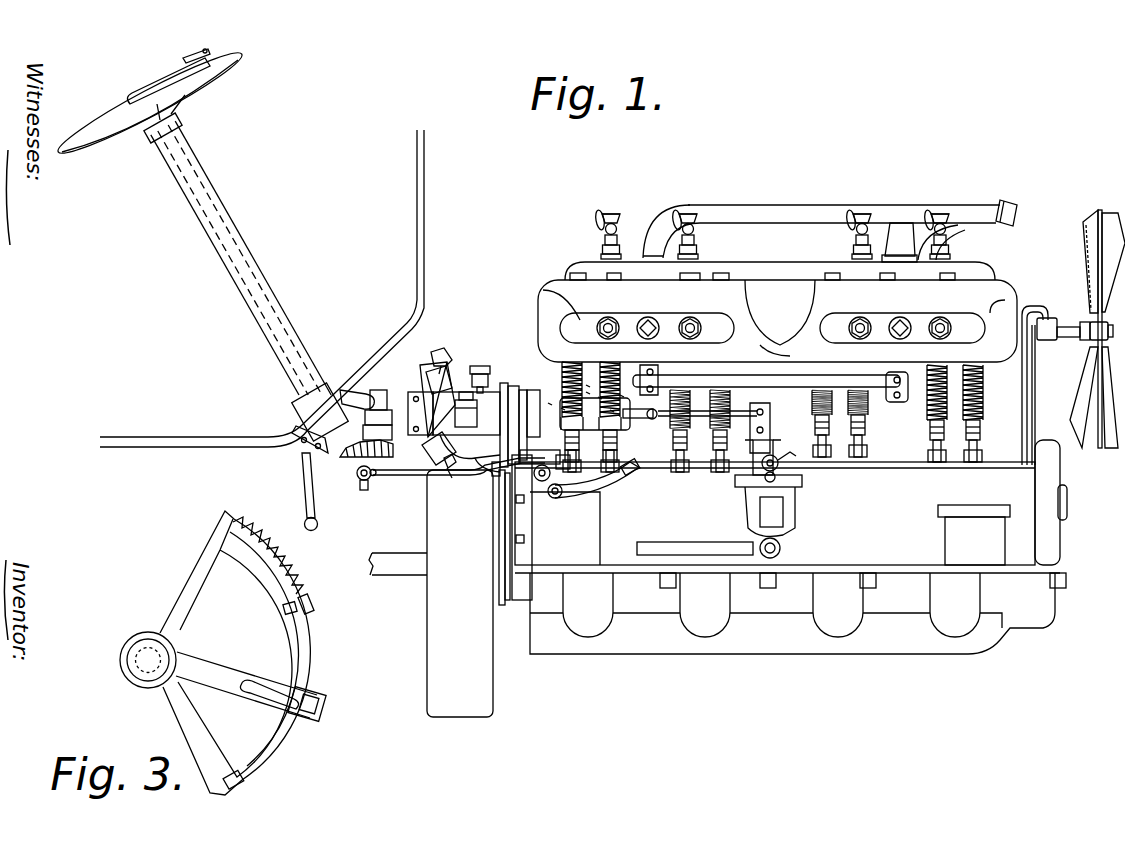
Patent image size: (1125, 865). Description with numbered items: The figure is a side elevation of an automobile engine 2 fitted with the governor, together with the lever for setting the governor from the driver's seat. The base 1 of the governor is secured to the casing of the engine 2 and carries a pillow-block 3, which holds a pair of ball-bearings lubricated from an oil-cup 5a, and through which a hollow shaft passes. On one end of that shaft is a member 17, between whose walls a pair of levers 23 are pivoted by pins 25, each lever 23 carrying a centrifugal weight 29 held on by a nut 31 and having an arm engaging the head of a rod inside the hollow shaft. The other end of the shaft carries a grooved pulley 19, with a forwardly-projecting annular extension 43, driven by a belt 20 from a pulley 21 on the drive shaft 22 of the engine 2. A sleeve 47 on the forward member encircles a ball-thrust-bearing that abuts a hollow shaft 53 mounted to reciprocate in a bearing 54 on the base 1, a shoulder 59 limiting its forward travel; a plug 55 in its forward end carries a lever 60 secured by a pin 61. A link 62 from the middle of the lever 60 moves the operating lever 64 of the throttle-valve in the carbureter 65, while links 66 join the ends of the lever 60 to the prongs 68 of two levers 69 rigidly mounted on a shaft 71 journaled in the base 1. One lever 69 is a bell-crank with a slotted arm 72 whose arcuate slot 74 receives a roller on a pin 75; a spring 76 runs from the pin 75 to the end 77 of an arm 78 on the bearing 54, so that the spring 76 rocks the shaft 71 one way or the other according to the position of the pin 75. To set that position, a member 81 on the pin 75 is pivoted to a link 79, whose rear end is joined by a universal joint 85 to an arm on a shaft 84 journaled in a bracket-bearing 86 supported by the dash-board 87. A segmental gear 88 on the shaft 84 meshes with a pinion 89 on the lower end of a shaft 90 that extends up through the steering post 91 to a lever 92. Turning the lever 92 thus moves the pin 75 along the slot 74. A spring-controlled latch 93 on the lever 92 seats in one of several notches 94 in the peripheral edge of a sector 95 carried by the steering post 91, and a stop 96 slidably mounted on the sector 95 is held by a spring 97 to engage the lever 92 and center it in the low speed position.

In FIG. 1, the base 1 is at (517, 485).
In FIG. 1, the engine 2 is at (791, 547).
In FIG. 1, the pillow-block 3 is at (472, 409).
In FIG. 1, the oil-cup 5a is at (477, 372).
In FIG. 1, the member 17 is at (433, 412).
In FIG. 1, the pulley 19 is at (510, 388).
In FIG. 1, the belt 20 is at (501, 385).
In FIG. 1, the pulley 21 is at (507, 603).
In FIG. 1, the drive shaft 22 is at (408, 568).
In FIG. 1, the lever 23 is at (442, 367).
In FIG. 1, the pin 25 is at (412, 397).
In FIG. 1, the centrifugal weight 29 is at (427, 372).
In FIG. 1, the nut 31 is at (442, 358).
In FIG. 1, the annular extension 43 is at (532, 390).
In FIG. 1, the sleeve 47 is at (517, 385).
In FIG. 1, the shaft 53 is at (588, 392).
In FIG. 1, the bearing 54 is at (622, 395).
In FIG. 1, the plug 55 is at (641, 384).
In FIG. 1, the shoulder 59 is at (550, 403).
In FIG. 1, the lever 60 is at (667, 412).
In FIG. 1, the pin 61 is at (632, 405).
In FIG. 1, the link 62 is at (737, 405).
In FIG. 1, the operating lever 64 is at (768, 455).
In FIG. 1, the carbureter 65 is at (790, 475).
In FIG. 1, the link 66 is at (593, 410).
In FIG. 1, the prong 68 is at (563, 408).
In FIG. 1, the lever 69 is at (530, 470).
In FIG. 1, the shaft 71 is at (541, 482).
In FIG. 1, the slotted arm 72 is at (570, 472).
In FIG. 1, the slot 74 is at (610, 474).
In FIG. 1, the pin 75 is at (560, 484).
In FIG. 1, the spring 76 is at (588, 385).
In FIG. 1, the end 77 is at (600, 397).
In FIG. 1, the arm 78 is at (612, 410).
In FIG. 1, the link 79 is at (433, 475).
In FIG. 1, the member 81 is at (565, 484).
In FIG. 1, the shaft 84 is at (340, 417).
In FIG. 1, the universal joint 85 is at (367, 480).
In FIG. 1, the bracket-bearing 86 is at (362, 400).
In FIG. 1, the dash-board 87 is at (422, 247).
In FIG. 1, the segmental gear 88 is at (362, 462).
In FIG. 1, the pinion 89 is at (367, 450).
In FIG. 1, the shaft 90 is at (232, 238).
In FIG. 3, the shaft 90 is at (150, 648).
In FIG. 1, the steering post 91 is at (234, 268).
In FIG. 1, the lever 92 is at (160, 80).
In FIG. 3, the lever 92 is at (200, 670).
In FIG. 1, the latch 93 is at (192, 52).
In FIG. 3, the latch 93 is at (323, 700).
In FIG. 1, the notch 94 is at (202, 62).
In FIG. 3, the notch 94 is at (303, 623).
In FIG. 3, the sector 95 is at (300, 677).
In FIG. 3, the stop 96 is at (313, 600).
In FIG. 3, the spring 97 is at (265, 527).